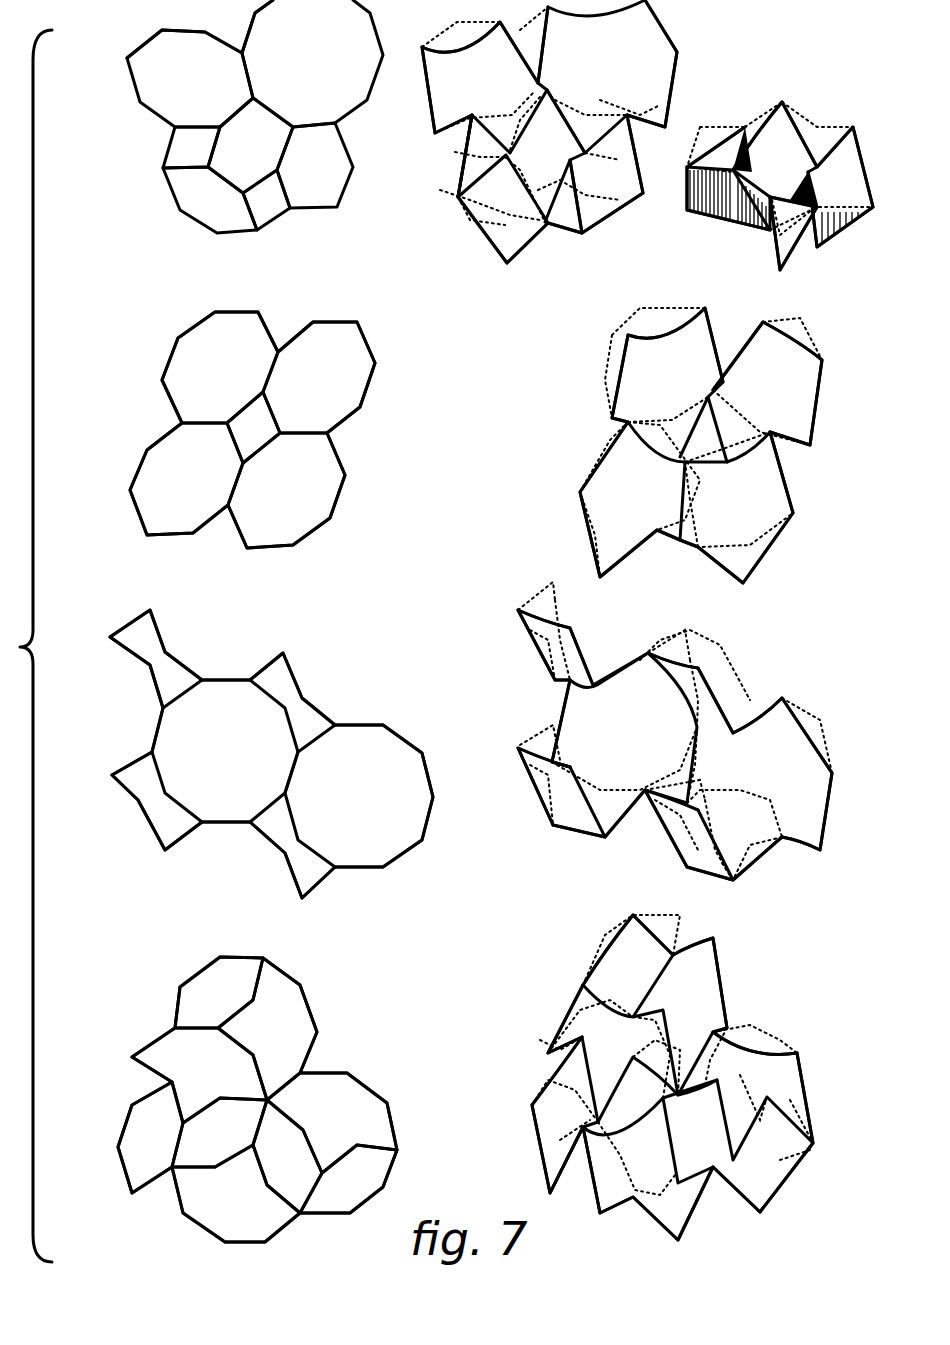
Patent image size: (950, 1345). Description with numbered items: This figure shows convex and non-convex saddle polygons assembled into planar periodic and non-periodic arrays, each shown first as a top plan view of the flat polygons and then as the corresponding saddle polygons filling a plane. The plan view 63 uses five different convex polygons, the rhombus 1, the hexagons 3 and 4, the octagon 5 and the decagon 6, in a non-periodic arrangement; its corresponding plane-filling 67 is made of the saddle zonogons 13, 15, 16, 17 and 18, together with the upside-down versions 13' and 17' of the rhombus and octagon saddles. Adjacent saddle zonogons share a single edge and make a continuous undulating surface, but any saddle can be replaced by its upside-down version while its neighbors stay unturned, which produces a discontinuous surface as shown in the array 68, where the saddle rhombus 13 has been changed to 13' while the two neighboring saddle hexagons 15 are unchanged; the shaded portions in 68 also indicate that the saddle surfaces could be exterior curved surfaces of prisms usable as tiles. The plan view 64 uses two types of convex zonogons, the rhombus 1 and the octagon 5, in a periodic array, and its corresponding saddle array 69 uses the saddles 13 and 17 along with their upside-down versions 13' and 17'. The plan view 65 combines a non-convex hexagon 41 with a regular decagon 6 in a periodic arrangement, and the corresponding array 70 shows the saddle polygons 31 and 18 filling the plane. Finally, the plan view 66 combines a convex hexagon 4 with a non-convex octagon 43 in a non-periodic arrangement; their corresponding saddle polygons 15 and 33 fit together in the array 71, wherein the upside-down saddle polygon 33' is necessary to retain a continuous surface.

The rhombus 1 is at (226, 295).
The hexagon 3 is at (280, 153).
The hexagon 4 is at (257, 690).
The octagon 5 is at (251, 289).
The decagon 6 is at (292, 433).
The saddle zonogon 13 is at (636, 311).
The upside-down saddle zonogon 13' is at (616, 200).
The saddle zonogon 15 is at (689, 651).
The saddle zonogon 16 is at (500, 233).
The saddle zonogon 17 is at (701, 447).
The upside-down saddle zonogon 17' is at (607, 302).
The saddle zonogon 18 is at (676, 440).
The saddle polygon 31 is at (548, 653).
The saddle polygon 33 is at (668, 1030).
The upside-down saddle polygon 33' is at (648, 1169).
The non-convex hexagon 41 is at (182, 665).
The non-convex octagon 43 is at (264, 1100).
The plan view 63 is at (140, 209).
The plan view 64 is at (112, 517).
The plan view 65 is at (102, 854).
The plan view 66 is at (105, 1199).
The plane-filling of saddle zonogons 67 is at (521, 290).
The discontinuous surface array 68 is at (793, 81).
The array of saddle polygons 69 is at (570, 459).
The array of saddle polygons 70 is at (549, 852).
The array of saddle polygons 71 is at (520, 1053).